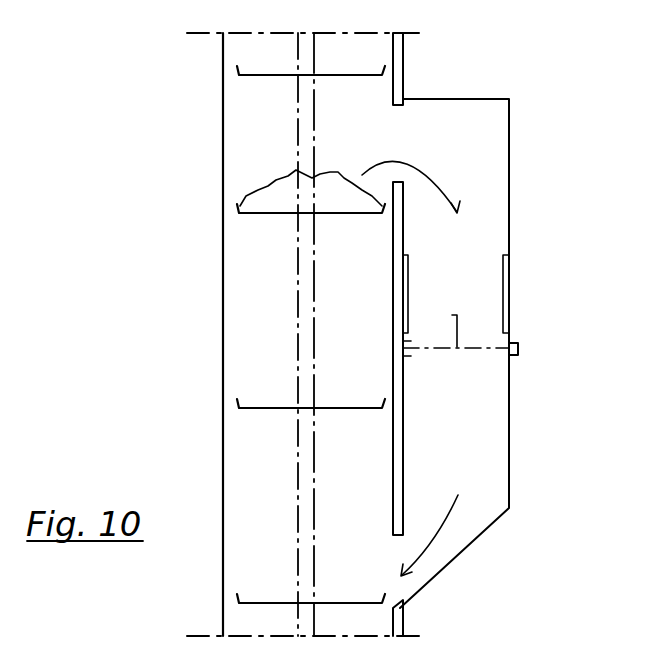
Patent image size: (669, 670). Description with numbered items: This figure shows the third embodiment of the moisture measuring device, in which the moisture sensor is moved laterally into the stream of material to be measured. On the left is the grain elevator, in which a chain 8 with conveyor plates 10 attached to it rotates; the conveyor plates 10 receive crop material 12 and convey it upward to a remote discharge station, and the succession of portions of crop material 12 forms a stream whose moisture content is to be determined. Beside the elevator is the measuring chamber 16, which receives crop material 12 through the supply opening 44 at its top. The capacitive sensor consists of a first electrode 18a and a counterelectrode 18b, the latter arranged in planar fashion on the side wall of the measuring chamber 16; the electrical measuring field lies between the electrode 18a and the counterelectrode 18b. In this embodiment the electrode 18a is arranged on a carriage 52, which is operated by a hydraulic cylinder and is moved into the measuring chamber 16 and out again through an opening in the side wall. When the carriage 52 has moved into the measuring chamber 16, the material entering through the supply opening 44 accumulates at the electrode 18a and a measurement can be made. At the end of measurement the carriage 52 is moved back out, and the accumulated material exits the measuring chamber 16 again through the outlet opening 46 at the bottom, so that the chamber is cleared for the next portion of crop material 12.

The chain 8 is at (307, 325).
The conveyor plates 10 is at (252, 217).
The crop material 12 is at (272, 202).
The measuring chamber 16 is at (452, 277).
The first electrode 18a is at (458, 322).
The counterelectrode 18b is at (507, 315).
The supply opening 44 is at (397, 133).
The outlet opening 46 is at (393, 588).
The carriage 52 is at (515, 342).